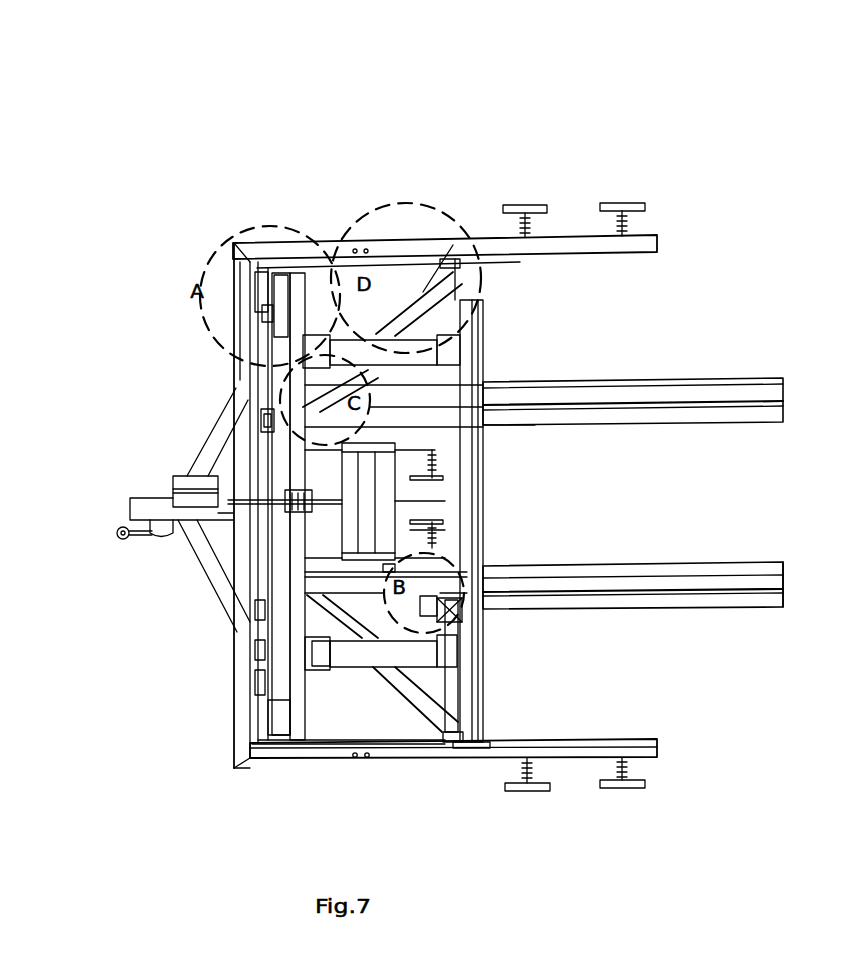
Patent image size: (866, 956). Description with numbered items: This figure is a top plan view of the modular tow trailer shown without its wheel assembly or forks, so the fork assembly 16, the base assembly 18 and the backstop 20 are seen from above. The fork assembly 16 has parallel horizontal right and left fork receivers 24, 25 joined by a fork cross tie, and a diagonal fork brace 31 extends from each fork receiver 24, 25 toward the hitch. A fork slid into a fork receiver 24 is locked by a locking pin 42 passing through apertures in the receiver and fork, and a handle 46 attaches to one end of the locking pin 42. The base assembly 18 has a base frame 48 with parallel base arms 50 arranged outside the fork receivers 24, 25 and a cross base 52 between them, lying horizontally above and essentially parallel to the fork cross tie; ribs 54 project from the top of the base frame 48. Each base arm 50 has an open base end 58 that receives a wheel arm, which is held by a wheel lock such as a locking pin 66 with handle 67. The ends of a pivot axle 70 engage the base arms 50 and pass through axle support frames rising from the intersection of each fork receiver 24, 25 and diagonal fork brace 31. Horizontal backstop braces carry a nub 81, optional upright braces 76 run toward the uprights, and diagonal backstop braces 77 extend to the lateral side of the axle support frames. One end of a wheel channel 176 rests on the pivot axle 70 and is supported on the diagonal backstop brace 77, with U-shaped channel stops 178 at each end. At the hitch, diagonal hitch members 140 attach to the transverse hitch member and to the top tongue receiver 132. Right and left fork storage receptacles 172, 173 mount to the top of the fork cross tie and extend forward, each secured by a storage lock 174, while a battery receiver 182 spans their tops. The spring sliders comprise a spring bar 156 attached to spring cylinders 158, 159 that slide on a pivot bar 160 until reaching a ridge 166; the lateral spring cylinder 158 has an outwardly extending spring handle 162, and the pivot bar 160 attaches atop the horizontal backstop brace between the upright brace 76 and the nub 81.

The fork assembly 16 is at (672, 562).
The base assembly 18 is at (307, 250).
The backstop 20 is at (482, 345).
The right fork receiver 24 is at (765, 570).
The left fork receiver 25 is at (783, 385).
The diagonal fork brace 31 is at (260, 400).
The locking pin 42 is at (445, 469).
The handle 46 is at (430, 525).
The base frame 48 is at (325, 767).
The base arm 50 is at (268, 253).
The cross base 52 is at (207, 262).
The rib 54 is at (598, 254).
The open base end 58 is at (658, 750).
The locking pin 66 is at (645, 216).
The handle 67 is at (613, 205).
The pivot axle 70 is at (462, 298).
The upright brace 76 is at (512, 398).
The diagonal backstop brace 77 is at (427, 290).
The nub 81 is at (267, 422).
The top tongue receiver 132 is at (127, 500).
The diagonal hitch member 140 is at (205, 452).
The spring bar 156 is at (305, 742).
The lateral spring cylinder 158 is at (240, 322).
The spring cylinder 159 is at (260, 610).
The pivot bar 160 is at (262, 650).
The spring handle 162 is at (258, 700).
The ridge 166 is at (290, 505).
The right fork storage receptacle 172 is at (483, 575).
The left fork storage receptacle 173 is at (470, 443).
The storage lock 174 is at (470, 533).
The wheel channel 176 is at (441, 240).
The channel stop 178 is at (333, 257).
The battery receiver 182 is at (395, 503).